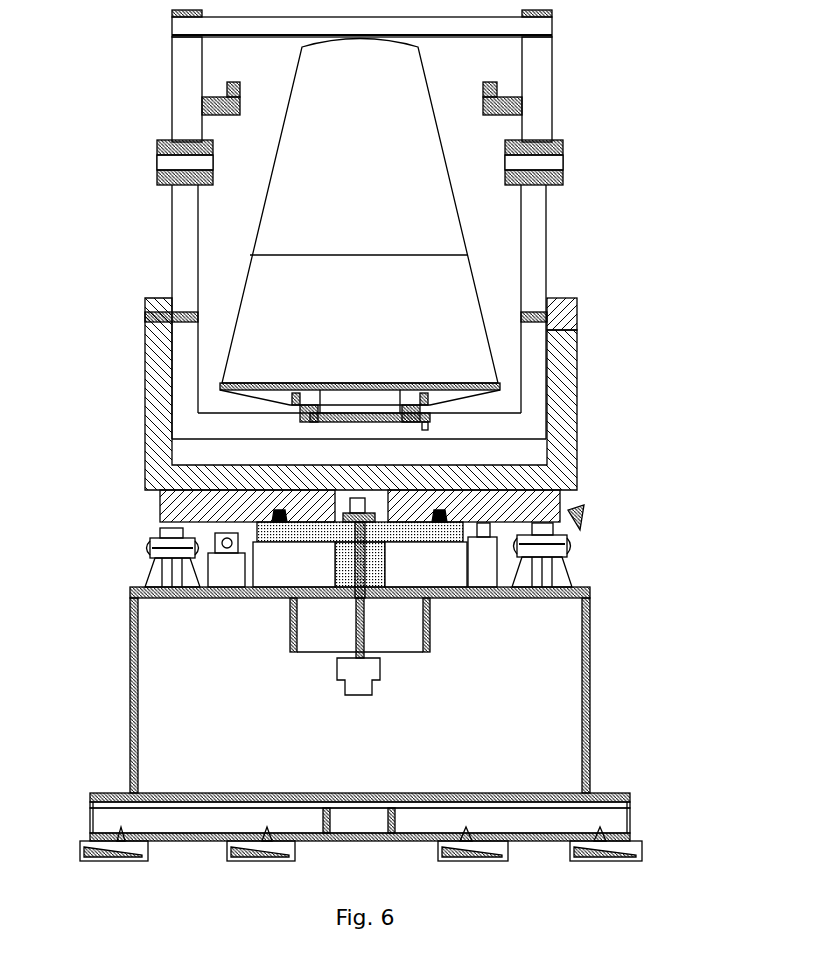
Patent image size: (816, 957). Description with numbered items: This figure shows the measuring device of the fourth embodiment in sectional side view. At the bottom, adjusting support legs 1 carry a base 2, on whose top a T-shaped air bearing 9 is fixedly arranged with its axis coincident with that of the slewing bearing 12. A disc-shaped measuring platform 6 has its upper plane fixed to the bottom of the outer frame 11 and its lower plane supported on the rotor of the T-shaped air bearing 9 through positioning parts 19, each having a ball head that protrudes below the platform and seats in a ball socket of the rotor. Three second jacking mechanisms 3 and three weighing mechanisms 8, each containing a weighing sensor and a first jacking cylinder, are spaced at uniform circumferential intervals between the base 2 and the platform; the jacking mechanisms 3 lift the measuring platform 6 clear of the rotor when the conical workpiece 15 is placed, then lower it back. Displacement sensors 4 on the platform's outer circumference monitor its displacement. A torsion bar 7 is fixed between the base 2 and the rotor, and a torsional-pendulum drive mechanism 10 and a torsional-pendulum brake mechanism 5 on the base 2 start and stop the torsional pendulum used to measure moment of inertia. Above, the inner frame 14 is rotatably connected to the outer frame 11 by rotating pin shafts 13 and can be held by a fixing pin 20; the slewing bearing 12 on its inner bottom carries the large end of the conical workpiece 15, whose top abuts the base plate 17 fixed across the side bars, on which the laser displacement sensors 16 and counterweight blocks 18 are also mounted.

The adjusting support leg 1 is at (600, 838).
The base 2 is at (523, 720).
The jacking mechanism 3 is at (572, 548).
The displacement sensor 4 is at (583, 507).
The torsional-pendulum brake mechanism 5 is at (520, 592).
The measuring platform 6 is at (158, 504).
The torsion bar 7 is at (360, 630).
The weighing mechanism 8 is at (150, 552).
The T-shaped air bearing 9 is at (300, 567).
The torsional-pendulum drive mechanism 10 is at (240, 568).
The outer frame 11 is at (165, 405).
The slewing bearing 12 is at (424, 403).
The rotating pin shaft 13 is at (180, 316).
The inner frame 14 is at (185, 342).
The conical workpiece 15 is at (290, 205).
The laser displacement sensor 16 is at (497, 100).
The base plate 17 is at (483, 27).
The counterweight block 18 is at (185, 160).
The positioning part 19 is at (445, 510).
The fixing pin 20 is at (550, 336).